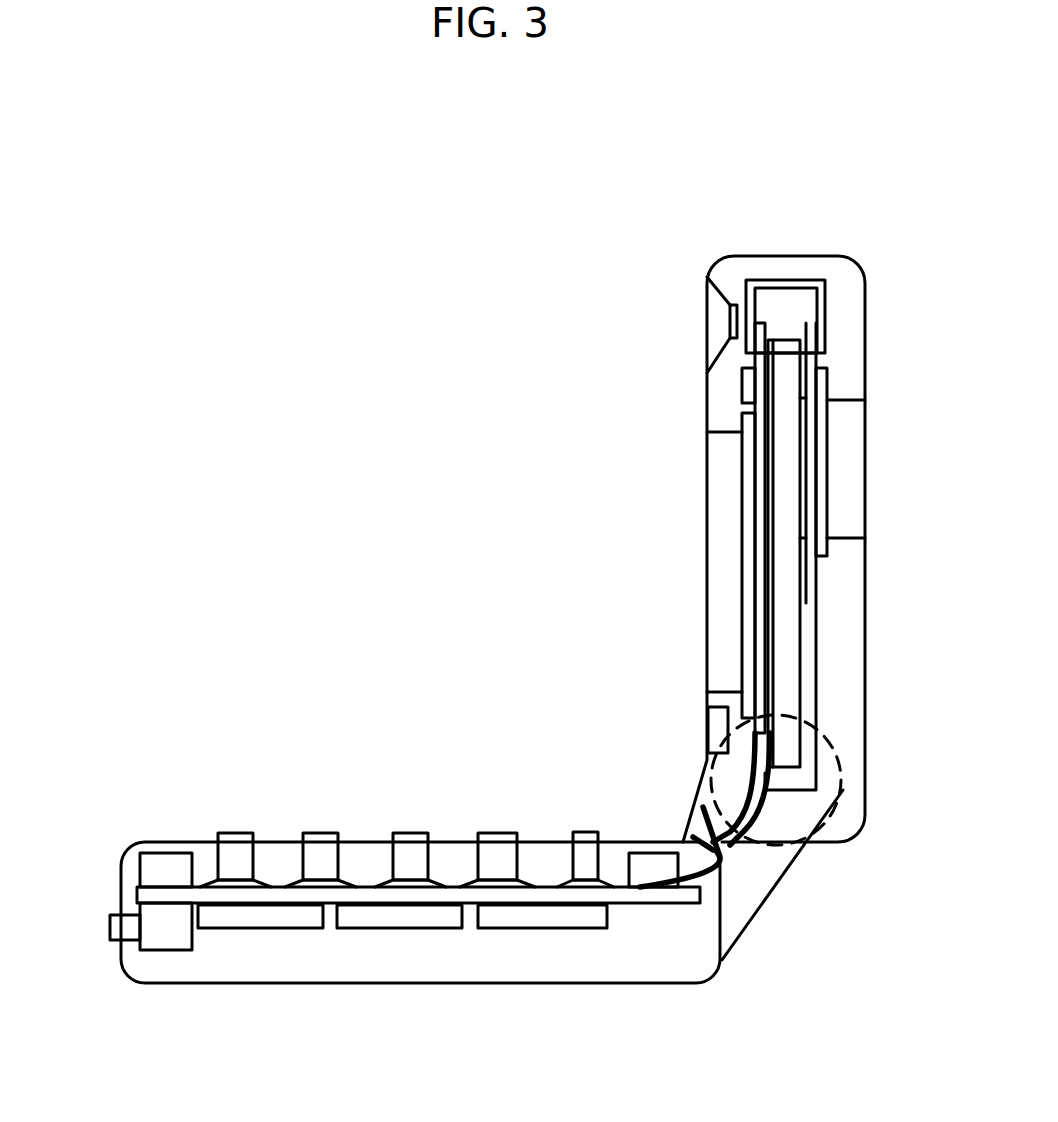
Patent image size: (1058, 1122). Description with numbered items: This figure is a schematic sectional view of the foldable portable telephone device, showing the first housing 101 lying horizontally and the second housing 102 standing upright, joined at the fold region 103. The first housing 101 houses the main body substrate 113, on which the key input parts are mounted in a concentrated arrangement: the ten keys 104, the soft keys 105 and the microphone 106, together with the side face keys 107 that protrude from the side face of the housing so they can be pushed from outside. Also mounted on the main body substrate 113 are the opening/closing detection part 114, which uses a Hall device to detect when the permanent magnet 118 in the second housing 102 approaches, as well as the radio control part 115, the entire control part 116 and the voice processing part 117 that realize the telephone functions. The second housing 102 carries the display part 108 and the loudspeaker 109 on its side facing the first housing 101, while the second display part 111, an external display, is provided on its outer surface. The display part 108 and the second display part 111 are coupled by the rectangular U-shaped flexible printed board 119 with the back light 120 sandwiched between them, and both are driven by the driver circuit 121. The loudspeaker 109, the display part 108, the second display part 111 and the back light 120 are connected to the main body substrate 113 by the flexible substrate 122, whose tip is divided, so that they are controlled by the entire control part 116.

The first housing 101 is at (583, 983).
The second housing 102 is at (740, 257).
The hinge portion 103 is at (843, 790).
The ten keys 104 is at (325, 833).
The soft keys 105 is at (572, 832).
The microphone 106 is at (170, 853).
The side face keys 107 is at (110, 940).
The display part 108 is at (752, 560).
The loudspeaker 109 is at (708, 335).
The second display part 111 is at (822, 420).
The main body substrate 113 is at (137, 897).
The opening/closing detection part 114 is at (658, 853).
The radio control part 115 is at (225, 928).
The entire control part 116 is at (360, 928).
The voice processing part 117 is at (503, 928).
The permanent magnet 118 is at (708, 735).
The flexible printed board 119 is at (783, 283).
The back light 120 is at (797, 642).
The driver circuit 121 is at (742, 397).
The flexible substrate 122 is at (715, 845).